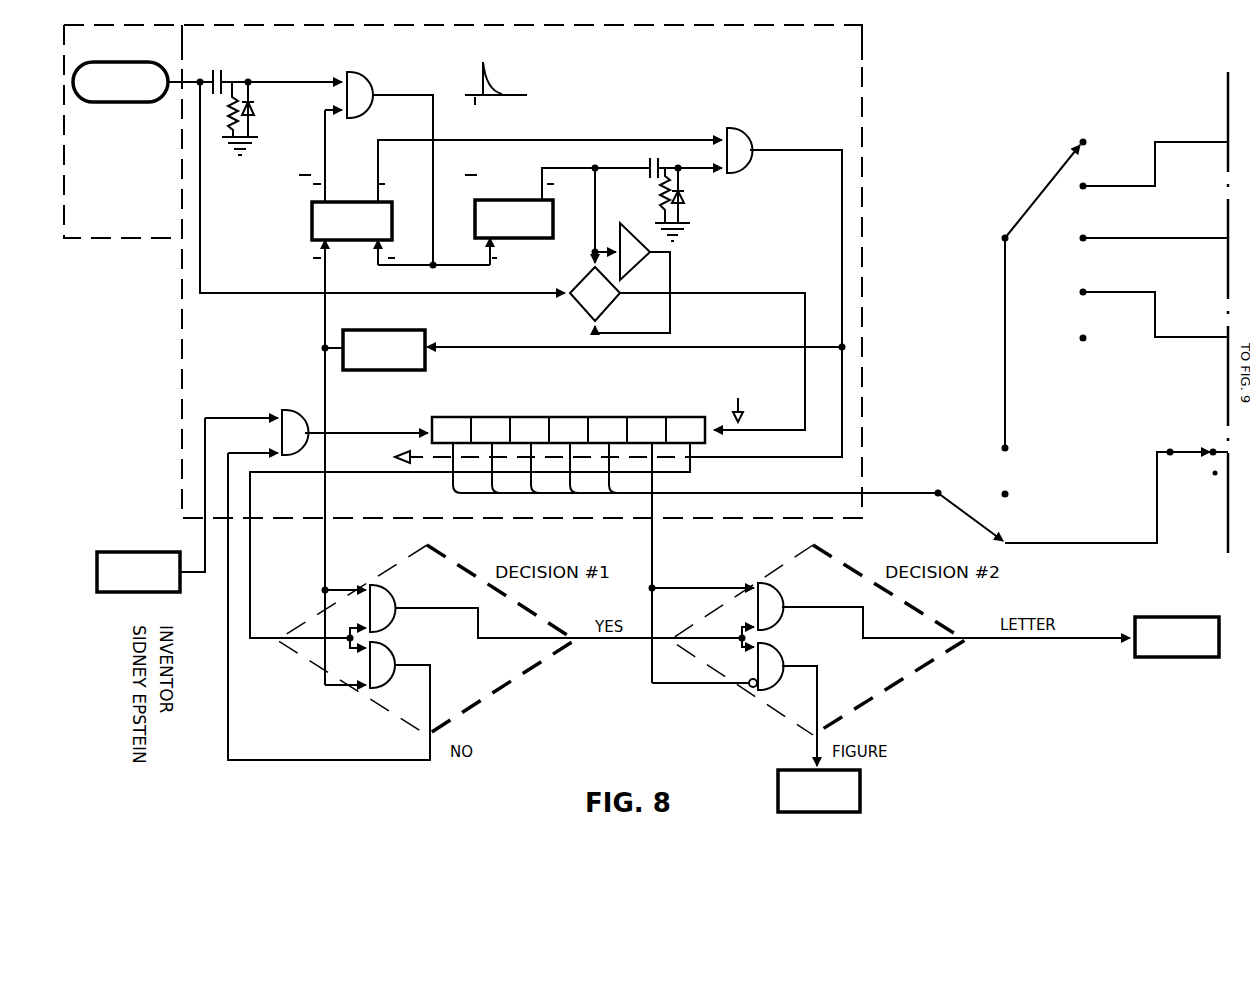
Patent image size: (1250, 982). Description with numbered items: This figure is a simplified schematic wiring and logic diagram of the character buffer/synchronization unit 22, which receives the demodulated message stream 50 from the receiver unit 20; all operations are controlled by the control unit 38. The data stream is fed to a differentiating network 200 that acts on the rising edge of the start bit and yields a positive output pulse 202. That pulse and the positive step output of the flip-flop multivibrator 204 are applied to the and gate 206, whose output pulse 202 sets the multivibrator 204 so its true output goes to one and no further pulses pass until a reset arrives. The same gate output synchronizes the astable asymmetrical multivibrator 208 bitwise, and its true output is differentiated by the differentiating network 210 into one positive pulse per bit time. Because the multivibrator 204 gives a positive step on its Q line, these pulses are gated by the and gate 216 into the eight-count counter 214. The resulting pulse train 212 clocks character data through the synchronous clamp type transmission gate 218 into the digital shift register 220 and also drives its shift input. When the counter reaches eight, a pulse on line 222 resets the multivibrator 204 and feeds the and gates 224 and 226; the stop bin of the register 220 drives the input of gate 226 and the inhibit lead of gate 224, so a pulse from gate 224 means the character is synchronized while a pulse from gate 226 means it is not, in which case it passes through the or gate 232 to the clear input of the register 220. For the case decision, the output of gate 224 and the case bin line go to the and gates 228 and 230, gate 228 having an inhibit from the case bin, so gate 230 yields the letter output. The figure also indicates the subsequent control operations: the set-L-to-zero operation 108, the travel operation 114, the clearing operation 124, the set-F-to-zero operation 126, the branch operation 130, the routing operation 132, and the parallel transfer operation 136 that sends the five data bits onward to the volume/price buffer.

The receiver unit 20 is at (139, 43).
The character buffer/synchronization unit 22 is at (157, 43).
The control unit 38 is at (906, 43).
The demodulated message stream 50 is at (319, 177).
The differentiating network 200 is at (277, 104).
The positive output pulse 202 is at (300, 73).
The flip-flop multivibrator 204 is at (339, 200).
The and gate 206 is at (371, 79).
The astable asymmetrical multivibrator 208 is at (500, 199).
The differentiating network 210 is at (686, 192).
The pulse train 212 is at (841, 182).
The 8-count counter 214 is at (582, 350).
The and gate 216 is at (757, 137).
The transmission gate 218 is at (620, 249).
The digital shift register 220 is at (712, 445).
The line 222 is at (324, 311).
The and gate 224 is at (397, 588).
The and gate 226 is at (397, 646).
The and gate 228 is at (785, 648).
The and gate 230 is at (785, 589).
The or gate 232 is at (722, 293).
The clearing operation 124 is at (151, 505).
The set F counter to zero operation 126 is at (1177, 637).
The set L counter to zero operation 108 is at (819, 791).
The travel operation 114 is at (973, 522).
The branch operation 130 is at (1061, 495).
The data routing operation 132 is at (1041, 197).
The parallel transfer operation 136 is at (1190, 458).